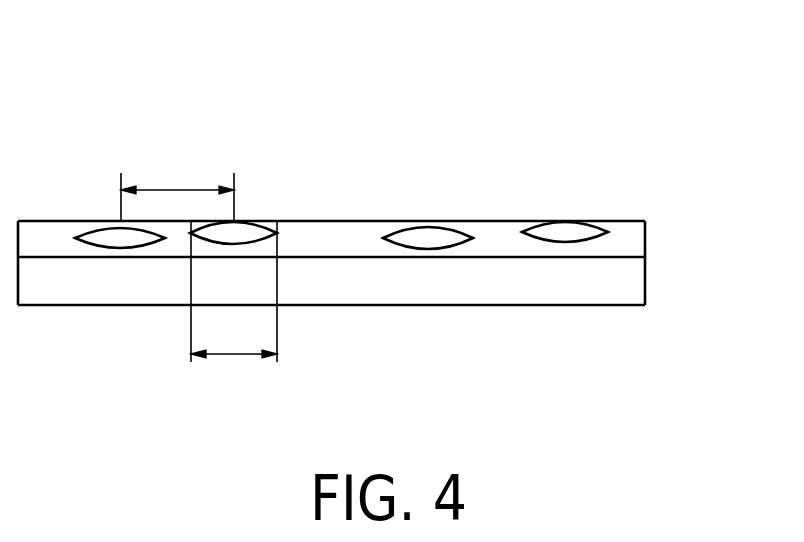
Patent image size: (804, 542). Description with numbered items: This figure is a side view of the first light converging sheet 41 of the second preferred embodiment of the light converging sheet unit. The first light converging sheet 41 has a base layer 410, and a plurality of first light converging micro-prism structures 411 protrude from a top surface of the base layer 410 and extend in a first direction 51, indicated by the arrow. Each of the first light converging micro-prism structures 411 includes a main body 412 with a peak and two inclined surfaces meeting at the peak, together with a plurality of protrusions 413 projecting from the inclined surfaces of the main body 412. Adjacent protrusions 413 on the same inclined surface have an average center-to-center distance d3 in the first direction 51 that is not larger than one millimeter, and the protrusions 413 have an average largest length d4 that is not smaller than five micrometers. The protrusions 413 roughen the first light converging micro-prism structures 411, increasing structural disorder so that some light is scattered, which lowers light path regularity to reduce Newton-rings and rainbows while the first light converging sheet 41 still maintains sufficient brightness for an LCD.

The first light converging sheet 41 is at (662, 298).
The base layer 410 is at (560, 283).
The first light converging micro-prism structures 411 is at (652, 250).
The main body 412 is at (630, 237).
The protrusions 413 is at (552, 233).
The first direction 51 is at (198, 67).
The average center-to-center distance d3 is at (177, 181).
The average largest length d4 is at (234, 291).